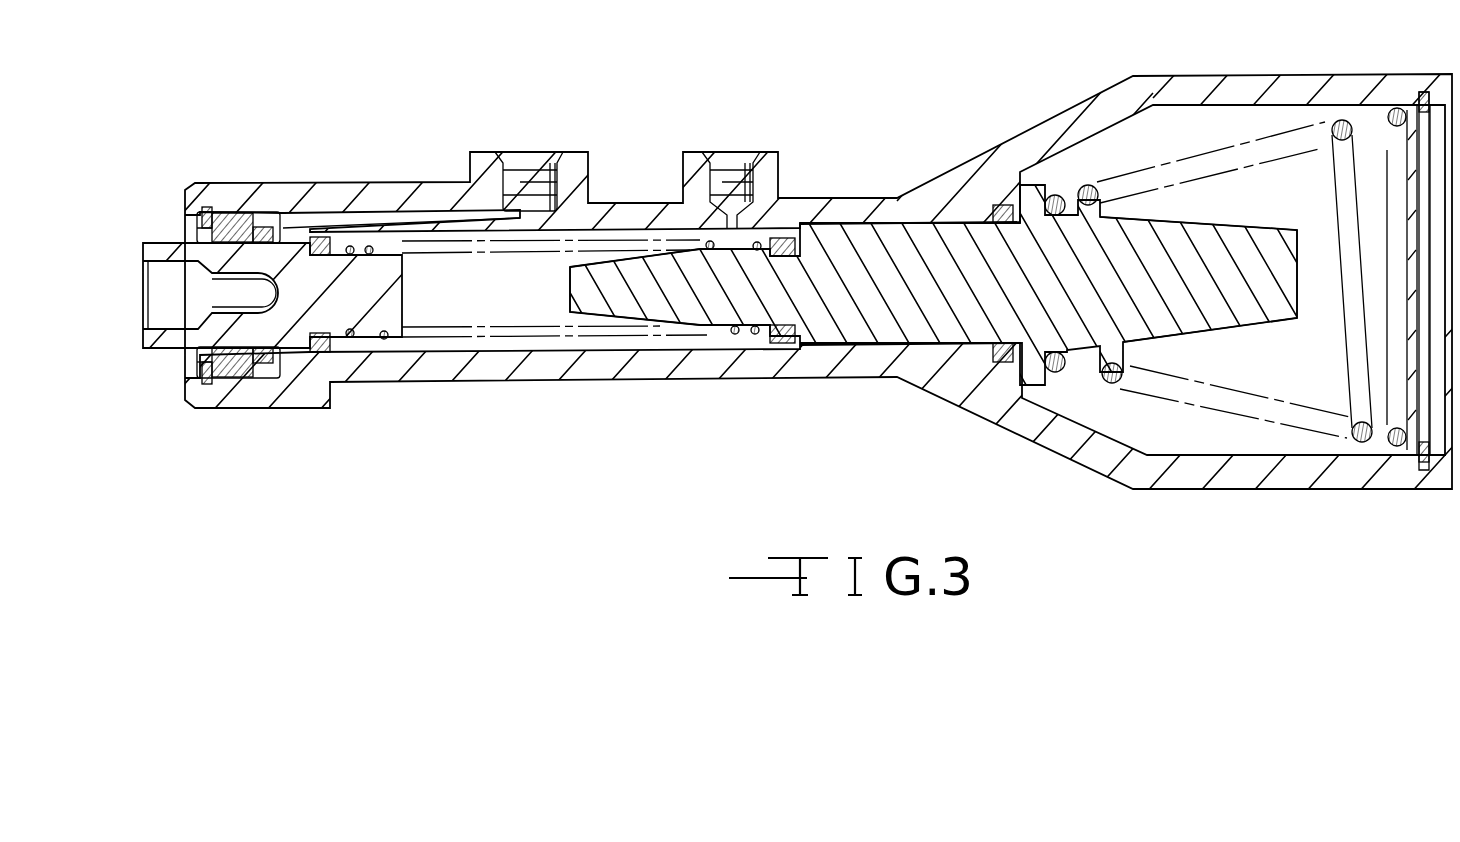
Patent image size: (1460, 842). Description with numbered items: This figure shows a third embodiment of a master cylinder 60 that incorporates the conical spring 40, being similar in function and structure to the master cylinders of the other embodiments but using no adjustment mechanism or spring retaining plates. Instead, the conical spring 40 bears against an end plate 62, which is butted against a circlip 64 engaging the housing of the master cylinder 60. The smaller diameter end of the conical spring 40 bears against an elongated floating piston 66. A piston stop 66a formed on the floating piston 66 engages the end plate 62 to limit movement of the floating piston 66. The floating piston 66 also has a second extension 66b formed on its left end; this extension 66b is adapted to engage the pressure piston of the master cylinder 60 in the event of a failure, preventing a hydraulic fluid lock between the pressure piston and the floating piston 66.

The master cylinder 60 is at (957, 100).
The conical spring 40 is at (1342, 120).
The end plate 62 is at (1407, 152).
The circlip 64 is at (1423, 489).
The floating piston 66 is at (880, 320).
The piston stop 66a is at (1231, 322).
The extension 66b is at (598, 302).